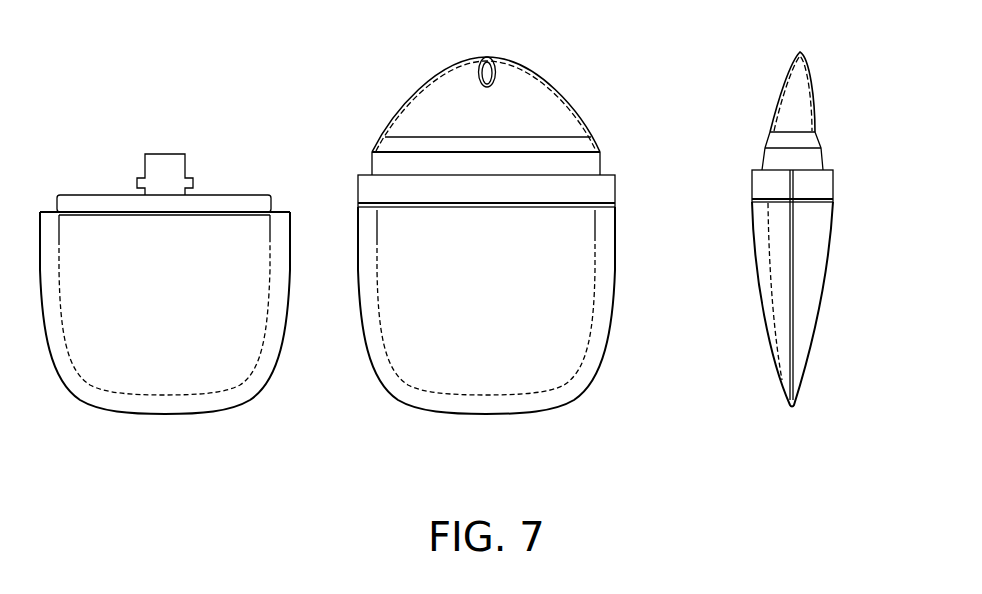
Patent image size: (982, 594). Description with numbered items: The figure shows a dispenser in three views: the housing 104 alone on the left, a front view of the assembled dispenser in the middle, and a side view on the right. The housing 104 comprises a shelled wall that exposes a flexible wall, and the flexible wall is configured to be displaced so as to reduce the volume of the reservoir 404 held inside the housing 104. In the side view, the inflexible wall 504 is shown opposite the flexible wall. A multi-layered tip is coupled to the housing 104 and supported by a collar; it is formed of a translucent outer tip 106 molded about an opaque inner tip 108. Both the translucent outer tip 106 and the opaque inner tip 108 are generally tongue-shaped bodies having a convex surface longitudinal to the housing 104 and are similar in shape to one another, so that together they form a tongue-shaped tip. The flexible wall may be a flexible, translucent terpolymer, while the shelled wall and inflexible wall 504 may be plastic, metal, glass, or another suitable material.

The housing 104 is at (269, 190).
The translucent outer tip 106 is at (452, 67).
The opaque inner tip 108 is at (436, 81).
The reservoir 404 is at (268, 269).
The inflexible wall 504 is at (833, 213).